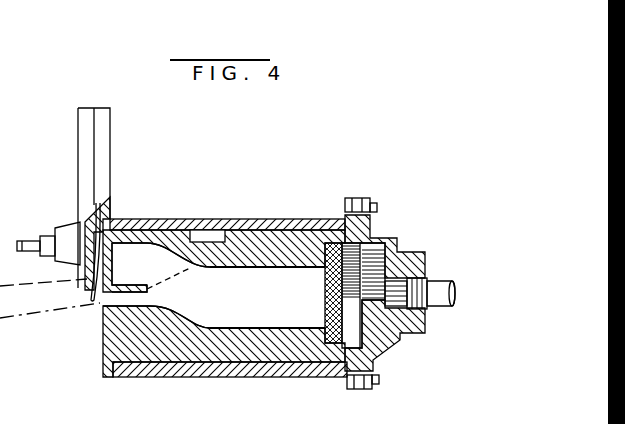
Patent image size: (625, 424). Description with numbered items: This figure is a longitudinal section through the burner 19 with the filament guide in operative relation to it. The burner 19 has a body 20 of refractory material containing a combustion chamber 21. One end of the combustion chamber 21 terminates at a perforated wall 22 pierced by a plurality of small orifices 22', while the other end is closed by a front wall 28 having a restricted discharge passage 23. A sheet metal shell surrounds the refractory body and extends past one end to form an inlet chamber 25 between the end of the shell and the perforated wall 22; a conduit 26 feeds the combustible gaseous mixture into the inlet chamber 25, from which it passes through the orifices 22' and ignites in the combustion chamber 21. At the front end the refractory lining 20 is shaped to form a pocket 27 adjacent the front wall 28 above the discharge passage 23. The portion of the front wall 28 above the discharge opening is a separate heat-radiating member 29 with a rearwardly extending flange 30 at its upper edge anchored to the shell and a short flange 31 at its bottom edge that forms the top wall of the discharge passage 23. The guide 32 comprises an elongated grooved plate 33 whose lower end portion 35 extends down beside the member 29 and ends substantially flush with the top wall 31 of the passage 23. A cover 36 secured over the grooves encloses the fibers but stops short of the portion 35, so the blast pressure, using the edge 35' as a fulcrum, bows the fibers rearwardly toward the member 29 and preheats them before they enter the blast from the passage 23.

The burner 19 is at (270, 294).
The body 20 is at (280, 235).
The combustion chamber 21 is at (252, 322).
The perforated wall 22 is at (319, 293).
The orifices 22' is at (326, 295).
The discharge passage 23 is at (130, 299).
The inlet chamber 25 is at (401, 341).
The conduit 26 is at (438, 280).
The pocket 27 is at (127, 238).
The front wall 28 is at (103, 326).
The member 29 is at (130, 245).
The flange 30 is at (212, 237).
The flange 31 is at (160, 285).
The guide 32 is at (112, 132).
The plate 33 is at (85, 126).
The lower end portion 35 is at (44, 254).
The edge 35' is at (50, 260).
The cover 36 is at (101, 176).